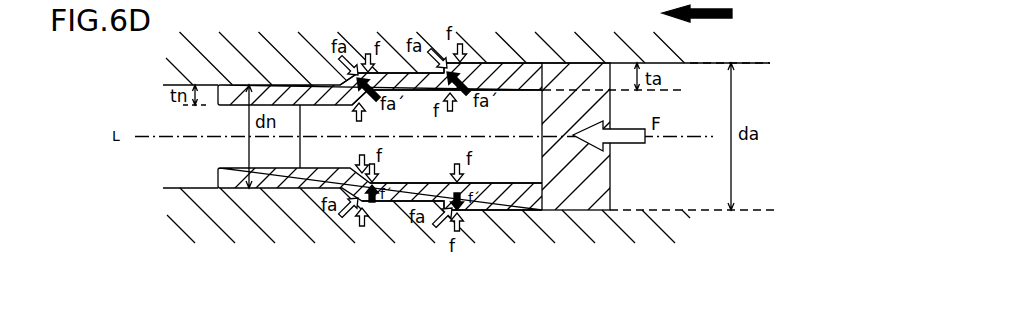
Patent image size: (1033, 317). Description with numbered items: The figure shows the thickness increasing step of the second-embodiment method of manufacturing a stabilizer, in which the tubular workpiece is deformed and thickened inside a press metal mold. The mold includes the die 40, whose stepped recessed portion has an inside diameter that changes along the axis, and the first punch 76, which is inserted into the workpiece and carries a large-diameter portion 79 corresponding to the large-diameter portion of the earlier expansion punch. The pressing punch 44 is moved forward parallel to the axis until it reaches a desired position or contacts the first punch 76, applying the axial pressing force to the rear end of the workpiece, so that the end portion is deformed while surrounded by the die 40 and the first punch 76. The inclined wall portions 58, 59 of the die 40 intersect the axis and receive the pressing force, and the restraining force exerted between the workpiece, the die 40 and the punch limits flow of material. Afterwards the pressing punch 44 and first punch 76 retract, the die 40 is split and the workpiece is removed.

The die 40 is at (576, 43).
The pressing punch 44 is at (592, 193).
The wall portion 58 is at (385, 82).
The wall portion 59 is at (457, 72).
The first punch 76 is at (315, 105).
The large-diameter portion 79 is at (513, 175).